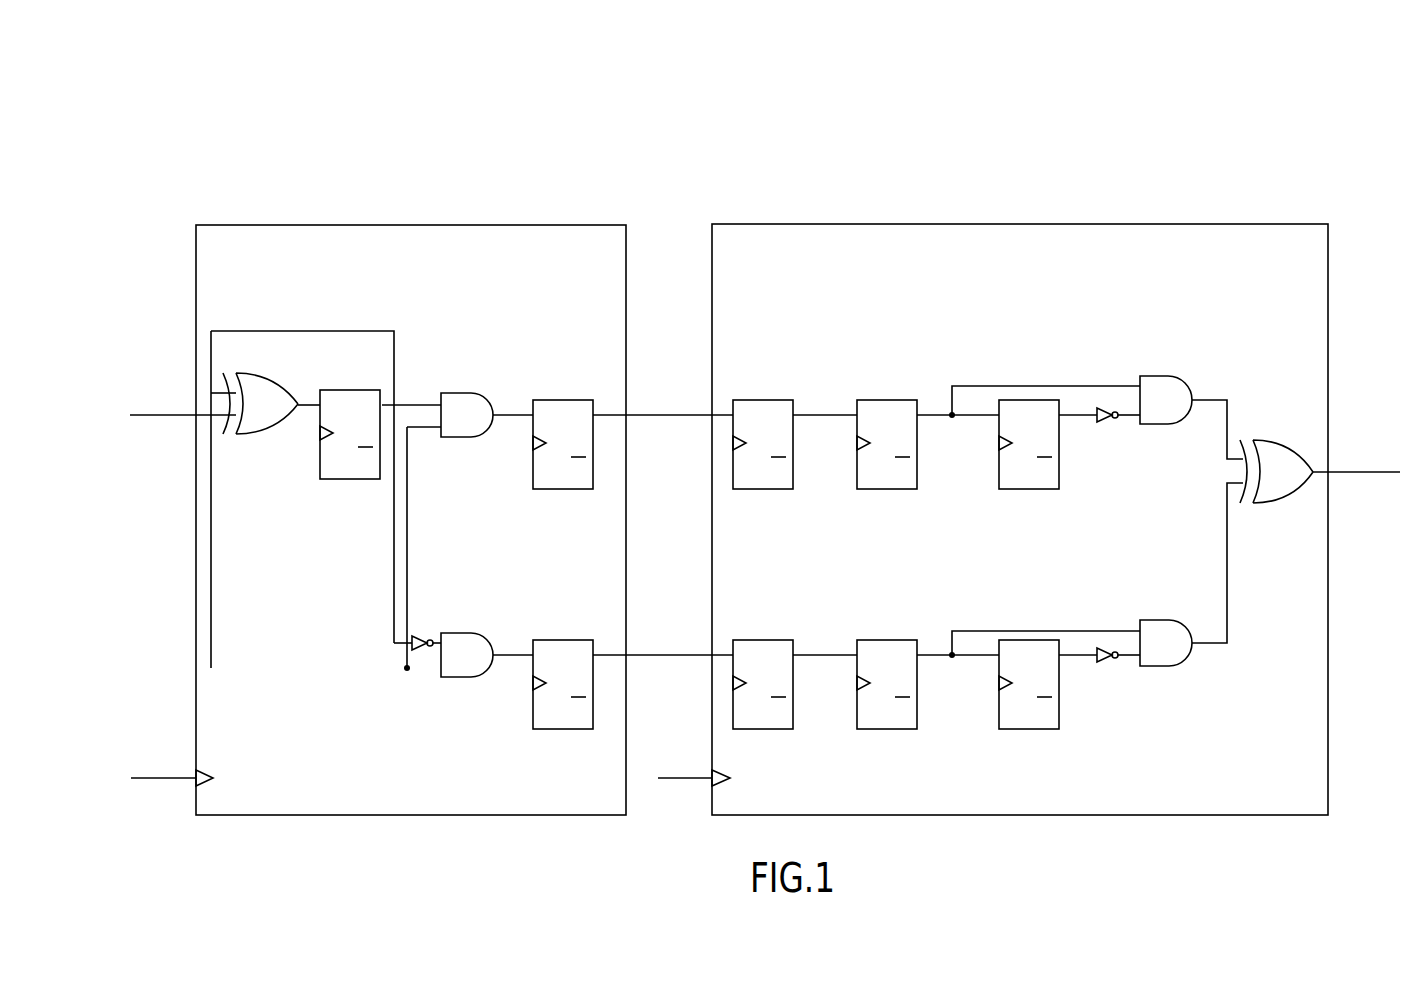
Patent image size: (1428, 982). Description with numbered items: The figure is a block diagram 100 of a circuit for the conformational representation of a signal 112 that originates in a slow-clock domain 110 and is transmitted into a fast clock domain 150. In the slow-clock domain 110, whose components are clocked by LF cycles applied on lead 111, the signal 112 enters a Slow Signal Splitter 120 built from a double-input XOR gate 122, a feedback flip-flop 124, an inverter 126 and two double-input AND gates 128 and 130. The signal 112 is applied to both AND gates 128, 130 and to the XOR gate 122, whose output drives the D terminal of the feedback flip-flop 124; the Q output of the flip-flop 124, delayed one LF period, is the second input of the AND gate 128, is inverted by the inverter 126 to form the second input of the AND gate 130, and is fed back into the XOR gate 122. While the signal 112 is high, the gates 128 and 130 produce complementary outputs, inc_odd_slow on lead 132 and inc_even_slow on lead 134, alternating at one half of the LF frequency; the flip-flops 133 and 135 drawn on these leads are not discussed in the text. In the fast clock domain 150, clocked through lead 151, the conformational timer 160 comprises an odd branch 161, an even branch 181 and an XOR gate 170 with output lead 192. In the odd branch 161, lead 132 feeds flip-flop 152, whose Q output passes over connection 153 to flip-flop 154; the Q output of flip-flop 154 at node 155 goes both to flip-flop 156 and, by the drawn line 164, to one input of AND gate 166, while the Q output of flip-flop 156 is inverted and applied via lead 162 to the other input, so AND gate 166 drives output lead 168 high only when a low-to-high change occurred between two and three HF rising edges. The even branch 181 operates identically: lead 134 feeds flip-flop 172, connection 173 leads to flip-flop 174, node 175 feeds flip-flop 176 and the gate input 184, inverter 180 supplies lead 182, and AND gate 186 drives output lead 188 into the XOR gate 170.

The block diagram 100 is at (1292, 88).
The slow-clock domain 110 is at (566, 173).
The lead 111 is at (153, 782).
The signal 112 is at (153, 420).
The Slow Signal Splitter 120 is at (350, 225).
The XOR gate 122 is at (273, 434).
The feedback flip-flop 124 is at (350, 478).
The inverter 126 is at (412, 638).
The AND gate 128 is at (453, 437).
The AND gate 130 is at (453, 677).
The lead 132 is at (686, 412).
The D flip-flop 133 is at (562, 490).
The lead 134 is at (686, 652).
The D flip-flop 135 is at (562, 730).
The fast clock domain 150 is at (1152, 171).
The lead 151 is at (680, 782).
The flip-flop 152 is at (763, 489).
The signal line 153 is at (825, 418).
The flip-flop 154 is at (887, 489).
The signal node 155 is at (957, 420).
The flip-flop 156 is at (1030, 489).
The conformational timer 160 is at (963, 223).
The odd branch 161 is at (866, 360).
The lead 162 is at (1130, 418).
The feedback line 164 is at (1078, 386).
The AND gate 166 is at (1180, 425).
The output lead 168 is at (1212, 401).
The XOR gate 170 is at (1288, 500).
The flip-flop 172 is at (763, 729).
The signal line 173 is at (825, 658).
The flip-flop 174 is at (887, 729).
The signal node 175 is at (957, 660).
The flip-flop 176 is at (1030, 729).
The inverter 180 is at (1110, 660).
The even branch 181 is at (866, 600).
The lead 182 is at (1130, 658).
The flip-flop 184 is at (1078, 631).
The AND gate 186 is at (1180, 666).
The output lead 188 is at (1210, 643).
The output lead 192 is at (1370, 475).